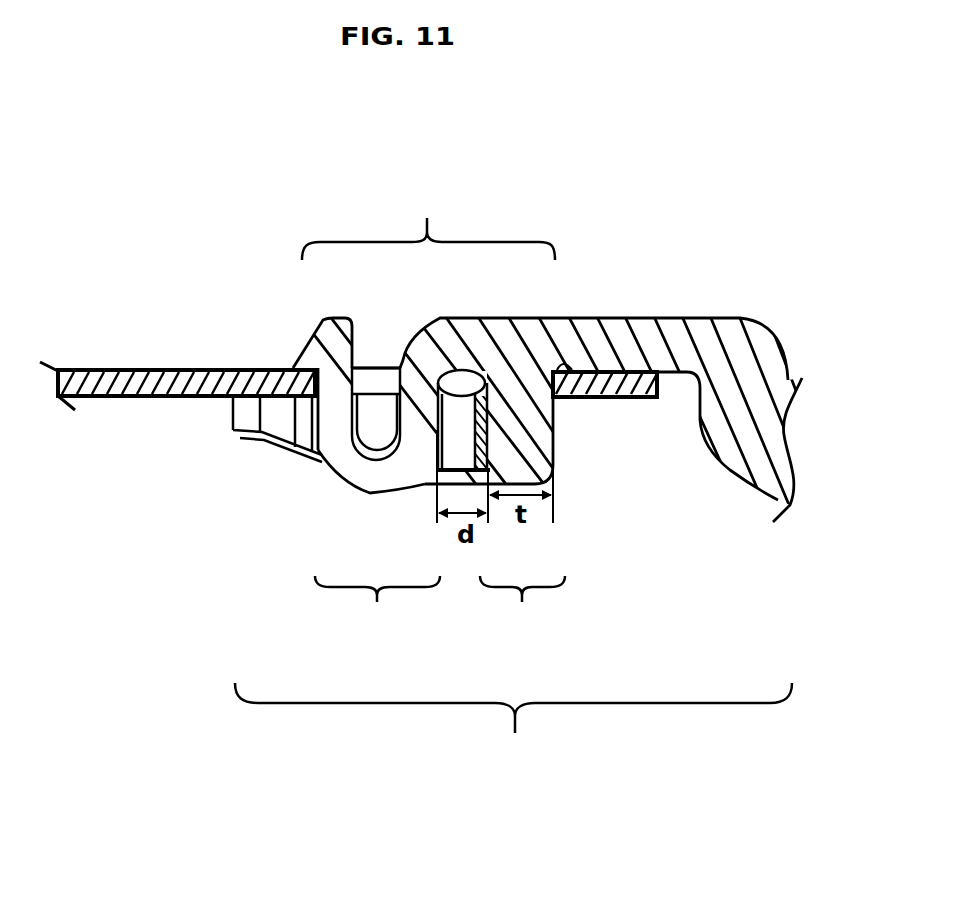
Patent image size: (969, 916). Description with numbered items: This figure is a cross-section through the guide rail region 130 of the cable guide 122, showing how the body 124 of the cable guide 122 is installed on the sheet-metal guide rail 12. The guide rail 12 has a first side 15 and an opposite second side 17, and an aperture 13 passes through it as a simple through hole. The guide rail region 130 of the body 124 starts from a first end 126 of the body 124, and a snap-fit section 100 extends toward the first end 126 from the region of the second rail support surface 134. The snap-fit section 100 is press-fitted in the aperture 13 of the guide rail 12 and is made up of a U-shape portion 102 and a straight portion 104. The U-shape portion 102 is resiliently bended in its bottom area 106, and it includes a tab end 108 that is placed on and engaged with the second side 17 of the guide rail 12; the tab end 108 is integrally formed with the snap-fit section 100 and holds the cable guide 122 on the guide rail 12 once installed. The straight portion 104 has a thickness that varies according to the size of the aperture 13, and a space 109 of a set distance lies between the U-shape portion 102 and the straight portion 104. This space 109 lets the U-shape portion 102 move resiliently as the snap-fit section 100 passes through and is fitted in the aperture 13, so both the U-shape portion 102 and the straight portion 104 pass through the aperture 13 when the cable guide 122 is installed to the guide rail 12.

The guide rail 12 is at (140, 365).
The second side 17 is at (193, 366).
The first side 15 is at (110, 397).
The aperture 13 is at (378, 368).
The snap-fit section 100 is at (428, 220).
The U-shape portion 102 is at (377, 610).
The straight portion 104 is at (522, 610).
The bottom area 106 is at (340, 492).
The tab end 108 is at (333, 345).
The space 109 is at (458, 443).
The cable guide 122 is at (632, 218).
The body 124 is at (740, 348).
The first end 126 is at (233, 415).
The guide rail region 130 is at (513, 732).
The second rail support surface 134 is at (612, 400).